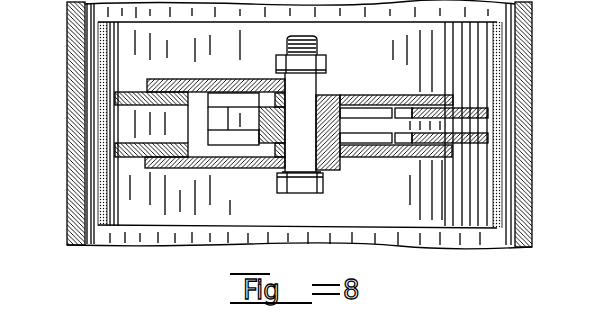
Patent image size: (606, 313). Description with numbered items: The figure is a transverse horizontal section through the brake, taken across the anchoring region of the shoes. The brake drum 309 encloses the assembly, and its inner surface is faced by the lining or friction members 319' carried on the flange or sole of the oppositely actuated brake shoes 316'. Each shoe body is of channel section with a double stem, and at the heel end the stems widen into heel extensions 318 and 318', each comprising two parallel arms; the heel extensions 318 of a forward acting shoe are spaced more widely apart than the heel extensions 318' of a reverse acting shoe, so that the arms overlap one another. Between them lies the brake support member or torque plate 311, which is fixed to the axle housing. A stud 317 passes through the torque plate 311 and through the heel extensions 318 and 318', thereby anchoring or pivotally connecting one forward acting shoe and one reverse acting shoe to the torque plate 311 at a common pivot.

The brake drum 309 is at (80, 40).
The lining or friction member 319' is at (307, 125).
The heel extension 318 is at (215, 122).
The heel extension 318' is at (284, 123).
The brake support member or torque plate 311 is at (338, 96).
The oppositely actuated brake shoe 316' is at (324, 181).
The stud 317 is at (303, 165).